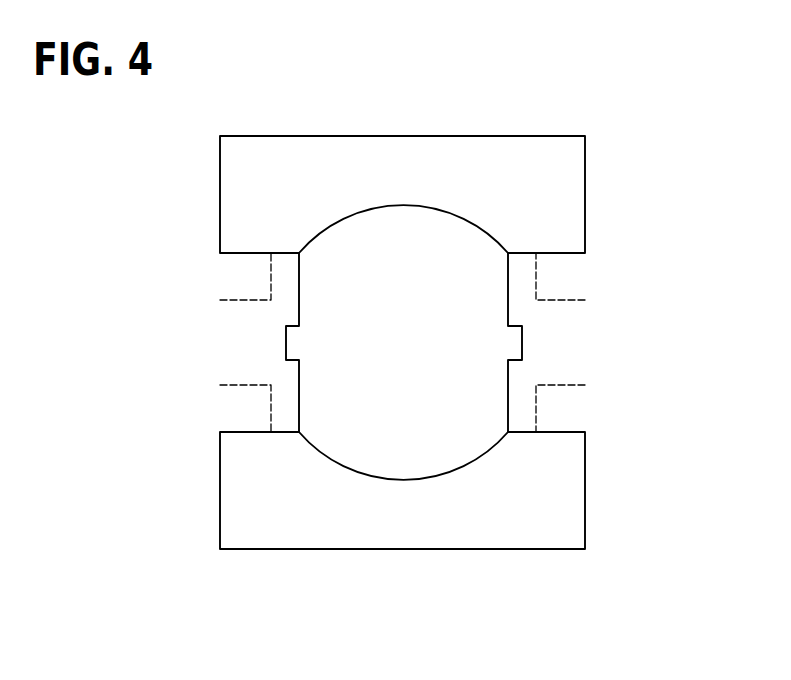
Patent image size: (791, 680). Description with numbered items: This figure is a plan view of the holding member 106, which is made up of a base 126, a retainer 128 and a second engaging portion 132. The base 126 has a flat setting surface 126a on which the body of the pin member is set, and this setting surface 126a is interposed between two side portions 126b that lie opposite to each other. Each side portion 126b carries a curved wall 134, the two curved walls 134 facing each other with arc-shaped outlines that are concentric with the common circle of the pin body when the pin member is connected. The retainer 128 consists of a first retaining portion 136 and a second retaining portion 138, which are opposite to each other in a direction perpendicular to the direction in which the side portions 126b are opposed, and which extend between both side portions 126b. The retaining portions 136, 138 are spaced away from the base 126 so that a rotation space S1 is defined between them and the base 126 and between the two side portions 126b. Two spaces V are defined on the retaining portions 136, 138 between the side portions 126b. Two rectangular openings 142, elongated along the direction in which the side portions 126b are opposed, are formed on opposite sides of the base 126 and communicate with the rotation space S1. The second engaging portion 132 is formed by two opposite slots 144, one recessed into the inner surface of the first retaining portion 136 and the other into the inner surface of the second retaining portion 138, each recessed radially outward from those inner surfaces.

The holding member 106 is at (640, 118).
The base 126 is at (588, 496).
The setting surface 126a is at (483, 315).
The side portions 126b is at (510, 150).
The retainer 128 is at (463, 93).
The second engaging portion 132 is at (463, 590).
The curved walls 134 is at (413, 206).
The first retaining portion 136 is at (288, 298).
The second retaining portion 138 is at (520, 267).
The openings 142 is at (218, 375).
The slots 144 is at (290, 350).
The rotation space S1 is at (330, 314).
The spaces V is at (245, 277).